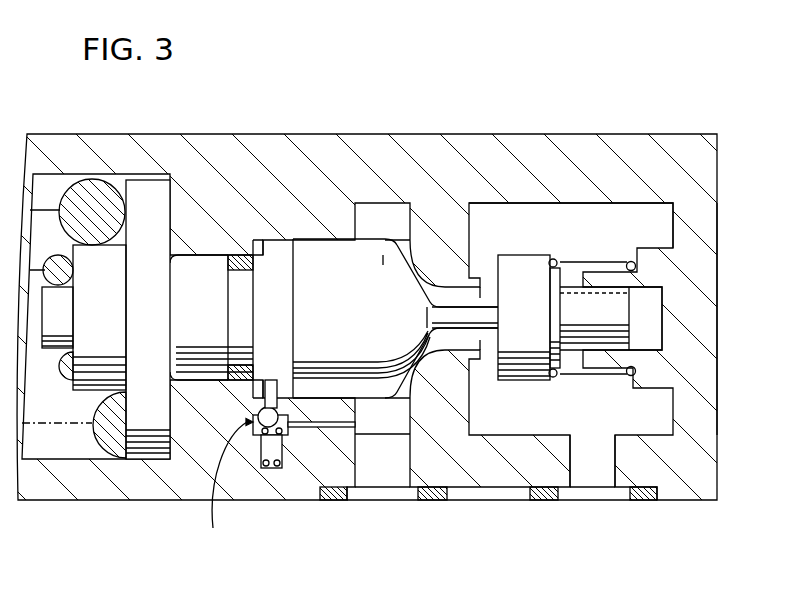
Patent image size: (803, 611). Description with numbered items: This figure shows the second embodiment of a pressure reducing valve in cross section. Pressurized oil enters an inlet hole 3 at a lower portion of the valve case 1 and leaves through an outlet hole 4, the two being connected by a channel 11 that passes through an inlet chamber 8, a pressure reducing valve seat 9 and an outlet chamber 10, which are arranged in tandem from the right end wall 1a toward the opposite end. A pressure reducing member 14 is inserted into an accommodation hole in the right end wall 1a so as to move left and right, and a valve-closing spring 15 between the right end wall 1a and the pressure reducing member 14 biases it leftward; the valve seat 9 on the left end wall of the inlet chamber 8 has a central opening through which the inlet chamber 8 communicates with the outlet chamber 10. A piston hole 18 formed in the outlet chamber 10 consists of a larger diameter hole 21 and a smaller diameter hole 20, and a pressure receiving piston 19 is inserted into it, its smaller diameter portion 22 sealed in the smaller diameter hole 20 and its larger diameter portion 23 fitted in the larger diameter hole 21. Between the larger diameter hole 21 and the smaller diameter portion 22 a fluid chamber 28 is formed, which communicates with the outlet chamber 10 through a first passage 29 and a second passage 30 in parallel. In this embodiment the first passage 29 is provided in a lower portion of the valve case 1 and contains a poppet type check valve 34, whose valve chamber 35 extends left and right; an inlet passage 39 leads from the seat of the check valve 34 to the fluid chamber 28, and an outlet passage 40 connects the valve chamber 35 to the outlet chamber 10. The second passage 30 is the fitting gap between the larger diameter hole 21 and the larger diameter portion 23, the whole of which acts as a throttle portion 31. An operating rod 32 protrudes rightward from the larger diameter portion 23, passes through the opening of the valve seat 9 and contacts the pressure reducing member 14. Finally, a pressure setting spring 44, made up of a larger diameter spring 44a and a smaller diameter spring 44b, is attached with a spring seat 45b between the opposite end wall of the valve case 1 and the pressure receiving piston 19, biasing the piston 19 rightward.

The valve case 1 is at (610, 134).
The right end wall 1a is at (695, 347).
The inlet hole 3 is at (605, 493).
The outlet hole 4 is at (407, 493).
The inlet chamber 8 is at (518, 213).
The pressure reducing valve seat 9 is at (492, 258).
The outlet chamber 10 is at (405, 232).
The channel 11 is at (514, 247).
The pressure reducing member 14 is at (537, 265).
The valve-closing spring 15 is at (640, 246).
The piston hole 18 is at (269, 229).
The pressure receiving piston 19 is at (391, 229).
The smaller diameter hole 20 is at (270, 273).
The larger diameter hole 21 is at (280, 255).
The smaller diameter portion 22 is at (285, 262).
The larger diameter portion 23 is at (320, 245).
The fluid chamber 28 is at (270, 382).
The first passage 29 is at (294, 478).
The second passage 30 is at (347, 385).
The throttle portion 31 is at (327, 385).
The operating rod 32 is at (493, 315).
The check valve 34 is at (228, 486).
The valve chamber 35 is at (265, 446).
The inlet passage 39 is at (278, 400).
The outlet passage 40 is at (323, 428).
The pressure setting spring 44 is at (82, 381).
The larger diameter spring 44a is at (117, 433).
The smaller diameter spring 44b is at (72, 378).
The spring seat 45b is at (155, 420).